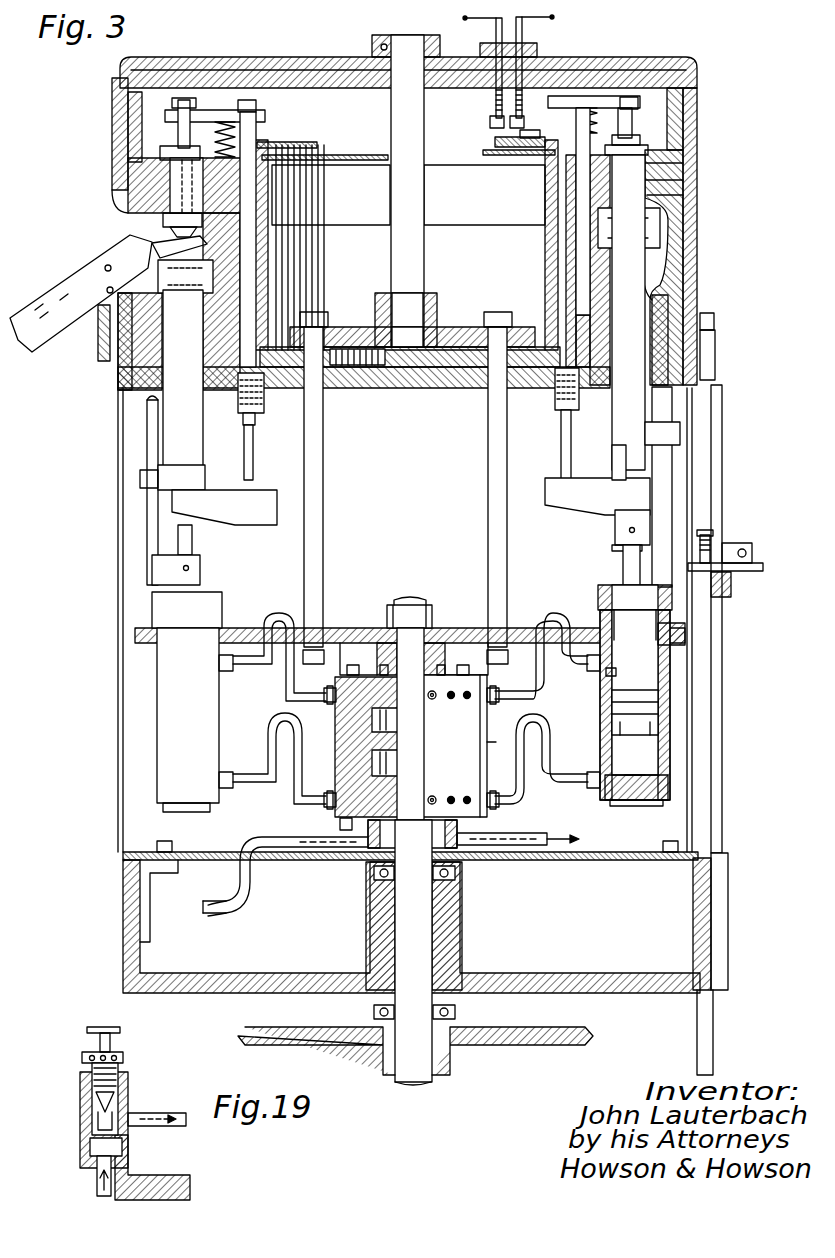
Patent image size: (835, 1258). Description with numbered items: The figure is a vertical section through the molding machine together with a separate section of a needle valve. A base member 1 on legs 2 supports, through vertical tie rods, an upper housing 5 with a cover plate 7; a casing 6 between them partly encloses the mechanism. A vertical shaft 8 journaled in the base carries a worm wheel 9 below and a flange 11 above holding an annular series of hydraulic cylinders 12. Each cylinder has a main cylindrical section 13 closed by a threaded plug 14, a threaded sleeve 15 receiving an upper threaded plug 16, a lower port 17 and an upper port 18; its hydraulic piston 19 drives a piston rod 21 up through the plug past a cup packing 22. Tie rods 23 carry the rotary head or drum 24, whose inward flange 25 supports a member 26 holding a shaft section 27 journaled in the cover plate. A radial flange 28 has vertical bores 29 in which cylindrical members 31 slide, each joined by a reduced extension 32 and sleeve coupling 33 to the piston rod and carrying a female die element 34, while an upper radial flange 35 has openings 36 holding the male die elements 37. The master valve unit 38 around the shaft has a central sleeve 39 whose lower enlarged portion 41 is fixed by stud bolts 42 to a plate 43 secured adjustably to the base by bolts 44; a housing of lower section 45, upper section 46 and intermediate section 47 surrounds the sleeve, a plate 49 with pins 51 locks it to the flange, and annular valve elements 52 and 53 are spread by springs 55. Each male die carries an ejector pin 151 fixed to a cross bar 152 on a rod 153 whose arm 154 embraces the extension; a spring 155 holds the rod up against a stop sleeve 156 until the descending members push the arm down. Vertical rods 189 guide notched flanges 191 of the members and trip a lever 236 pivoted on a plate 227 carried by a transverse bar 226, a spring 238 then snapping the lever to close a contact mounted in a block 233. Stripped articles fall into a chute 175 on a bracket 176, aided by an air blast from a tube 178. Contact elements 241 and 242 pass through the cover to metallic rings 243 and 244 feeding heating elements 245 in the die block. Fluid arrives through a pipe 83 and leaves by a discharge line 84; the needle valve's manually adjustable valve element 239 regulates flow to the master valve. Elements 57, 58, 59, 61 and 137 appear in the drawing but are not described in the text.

In FIG. 3, the base member 1 is at (124, 926).
In FIG. 19, the base member 1 is at (163, 1177).
In FIG. 3, the legs 2 is at (714, 1038).
In FIG. 3, the upper housing 5 is at (699, 230).
In FIG. 3, the casing 6 is at (118, 505).
In FIG. 3, the cover plate 7 is at (689, 62).
In FIG. 3, the vertical shaft 8 is at (432, 918).
In FIG. 3, the worm wheel 9 is at (530, 1044).
In FIG. 3, the flange 11 is at (356, 628).
In FIG. 3, the hydraulic cylinders 12 is at (163, 718).
In FIG. 3, the main cylindrical section 13 is at (670, 666).
In FIG. 3, the threaded plug 14 is at (212, 810).
In FIG. 3, the threaded sleeve 15 is at (672, 618).
In FIG. 3, the threaded plug 16 is at (211, 590).
In FIG. 3, the port 17 is at (630, 781).
In FIG. 3, the port 18 is at (608, 673).
In FIG. 3, the hydraulic piston 19 is at (620, 711).
In FIG. 3, the piston rod 21 is at (626, 563).
In FIG. 3, the cup packing 22 is at (686, 638).
In FIG. 3, the tie rods 23 is at (322, 478).
In FIG. 3, the rotary head or drum 24 is at (548, 252).
In FIG. 3, the inwardly projecting flange 25 is at (283, 335).
In FIG. 3, the member 26 is at (437, 303).
In FIG. 3, the shaft section 27 is at (416, 193).
In FIG. 3, the radial flange 28 is at (657, 293).
In FIG. 3, the vertical bores 29 is at (714, 321).
In FIG. 3, the cylindrical member 31 is at (640, 350).
In FIG. 3, the extension 32 is at (190, 538).
In FIG. 3, the sleeve coupling 33 is at (154, 567).
In FIG. 3, the die element 34 is at (213, 271).
In FIG. 3, the radial flange 35 is at (675, 163).
In FIG. 3, the cylindrical openings 36 is at (655, 182).
In FIG. 3, the die element 37 is at (648, 196).
In FIG. 3, the master valve unit 38 is at (460, 751).
In FIG. 3, the central sleeve 39 is at (416, 701).
In FIG. 3, the lower enlarged portion 41 is at (424, 839).
In FIG. 3, the stud bolts 42 is at (340, 825).
In FIG. 3, the plate 43 is at (318, 851).
In FIG. 3, the bolts 44 is at (166, 844).
In FIG. 3, the lower section 45 is at (492, 793).
In FIG. 3, the upper section 46 is at (489, 680).
In FIG. 3, the intermediate section 47 is at (496, 742).
In FIG. 3, the plate 49 is at (332, 685).
In FIG. 3, the pins 51 is at (378, 670).
In FIG. 3, the annular valve element 52 is at (416, 774).
In FIG. 3, the annular valve element 53 is at (416, 731).
In FIG. 3, the springs 55 is at (348, 749).
In FIG. 3, the valve screws 57 is at (467, 792).
In FIG. 3, the valve screws 58 is at (467, 700).
In FIG. 3, the pipe 59 is at (246, 776).
In FIG. 3, the pipe 61 is at (286, 680).
In FIG. 3, the pipe 83 is at (238, 910).
In FIG. 19, the pipe 83 is at (161, 1112).
In FIG. 3, the discharge line 84 is at (522, 846).
In FIG. 3, the valve seat block 137 is at (175, 173).
In FIG. 3, the pin 151 is at (182, 132).
In FIG. 3, the cross bar 152 is at (197, 116).
In FIG. 3, the rod 153 is at (258, 127).
In FIG. 3, the arm 154 is at (252, 522).
In FIG. 3, the spring 155 is at (220, 122).
In FIG. 3, the adjustable stop sleeve 156 is at (264, 406).
In FIG. 3, the chute 175 is at (55, 298).
In FIG. 3, the bracket 176 is at (99, 356).
In FIG. 3, the tube 178 is at (207, 240).
In FIG. 3, the vertical rods 189 is at (150, 426).
In FIG. 3, the flange 191 is at (141, 478).
In FIG. 3, the transverse bar 226 is at (731, 588).
In FIG. 3, the plate 227 is at (762, 567).
In FIG. 3, the block 233 is at (748, 543).
In FIG. 3, the lever 236 is at (628, 548).
In FIG. 3, the spring 238 is at (710, 540).
In FIG. 19, the valve element 239 is at (96, 1105).
In FIG. 3, the contact element 241 is at (496, 33).
In FIG. 3, the contact element 242 is at (523, 42).
In FIG. 3, the metallic ring 243 is at (498, 134).
In FIG. 3, the metallic ring 244 is at (527, 133).
In FIG. 3, the heating elements 245 is at (245, 207).